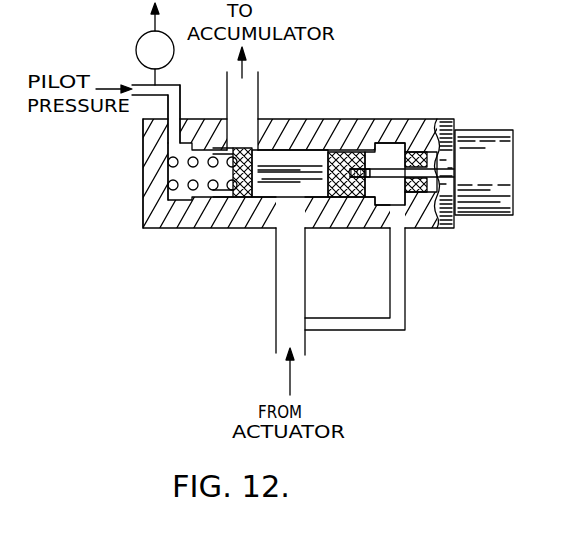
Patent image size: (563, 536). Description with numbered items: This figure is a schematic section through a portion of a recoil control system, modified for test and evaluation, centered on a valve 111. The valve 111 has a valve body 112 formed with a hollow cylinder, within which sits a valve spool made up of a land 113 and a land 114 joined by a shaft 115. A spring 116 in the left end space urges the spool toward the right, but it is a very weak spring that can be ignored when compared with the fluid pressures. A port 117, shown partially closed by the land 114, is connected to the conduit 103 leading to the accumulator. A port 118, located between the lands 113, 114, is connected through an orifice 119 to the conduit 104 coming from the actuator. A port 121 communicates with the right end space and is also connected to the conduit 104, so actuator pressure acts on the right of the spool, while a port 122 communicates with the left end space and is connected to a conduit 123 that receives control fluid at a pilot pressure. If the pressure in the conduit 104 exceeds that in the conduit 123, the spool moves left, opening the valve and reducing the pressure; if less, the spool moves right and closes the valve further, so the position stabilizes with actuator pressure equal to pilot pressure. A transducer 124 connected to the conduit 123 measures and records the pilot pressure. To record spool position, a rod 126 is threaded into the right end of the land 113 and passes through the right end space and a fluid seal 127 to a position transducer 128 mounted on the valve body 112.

The conduit 103 is at (227, 101).
The conduit 104 is at (277, 314).
The valve 111 is at (113, 258).
The valve body 112 is at (420, 230).
The land 113 is at (342, 150).
The land 114 is at (240, 197).
The shaft 115 is at (312, 200).
The spring 116 is at (190, 192).
The port 117 is at (255, 92).
The port 118 is at (283, 252).
The orifice 119 is at (283, 284).
The port 121 is at (400, 280).
The port 122 is at (165, 130).
The conduit 123 is at (141, 115).
The transducer 124 is at (136, 47).
The rod 126 is at (385, 165).
The fluid seal 127 is at (415, 170).
The position transducer 128 is at (486, 133).